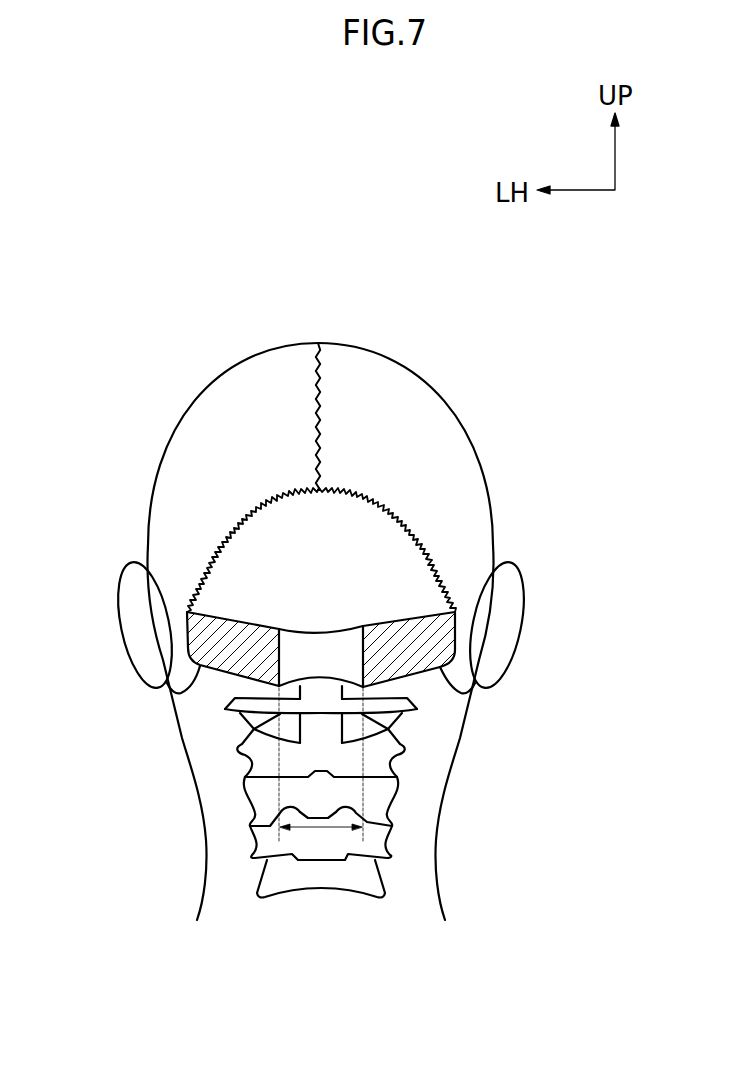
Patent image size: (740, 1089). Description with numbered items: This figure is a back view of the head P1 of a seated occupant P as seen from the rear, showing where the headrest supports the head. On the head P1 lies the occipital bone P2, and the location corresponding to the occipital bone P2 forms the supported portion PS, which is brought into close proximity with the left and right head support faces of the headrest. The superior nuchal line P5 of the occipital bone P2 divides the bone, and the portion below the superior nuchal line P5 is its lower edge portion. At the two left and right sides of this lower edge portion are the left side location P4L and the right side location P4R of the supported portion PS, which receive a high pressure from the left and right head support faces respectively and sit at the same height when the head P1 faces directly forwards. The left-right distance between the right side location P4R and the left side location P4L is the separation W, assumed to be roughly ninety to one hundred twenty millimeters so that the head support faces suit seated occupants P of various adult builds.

The seated occupant P is at (321, 589).
The head P1 is at (365, 341).
The supported portion PS is at (339, 657).
The occipital bone P2 is at (363, 522).
The superior nuchal line P5 is at (420, 618).
The left side location P4L is at (225, 677).
The right side location P4R is at (430, 668).
The separation W is at (321, 770).